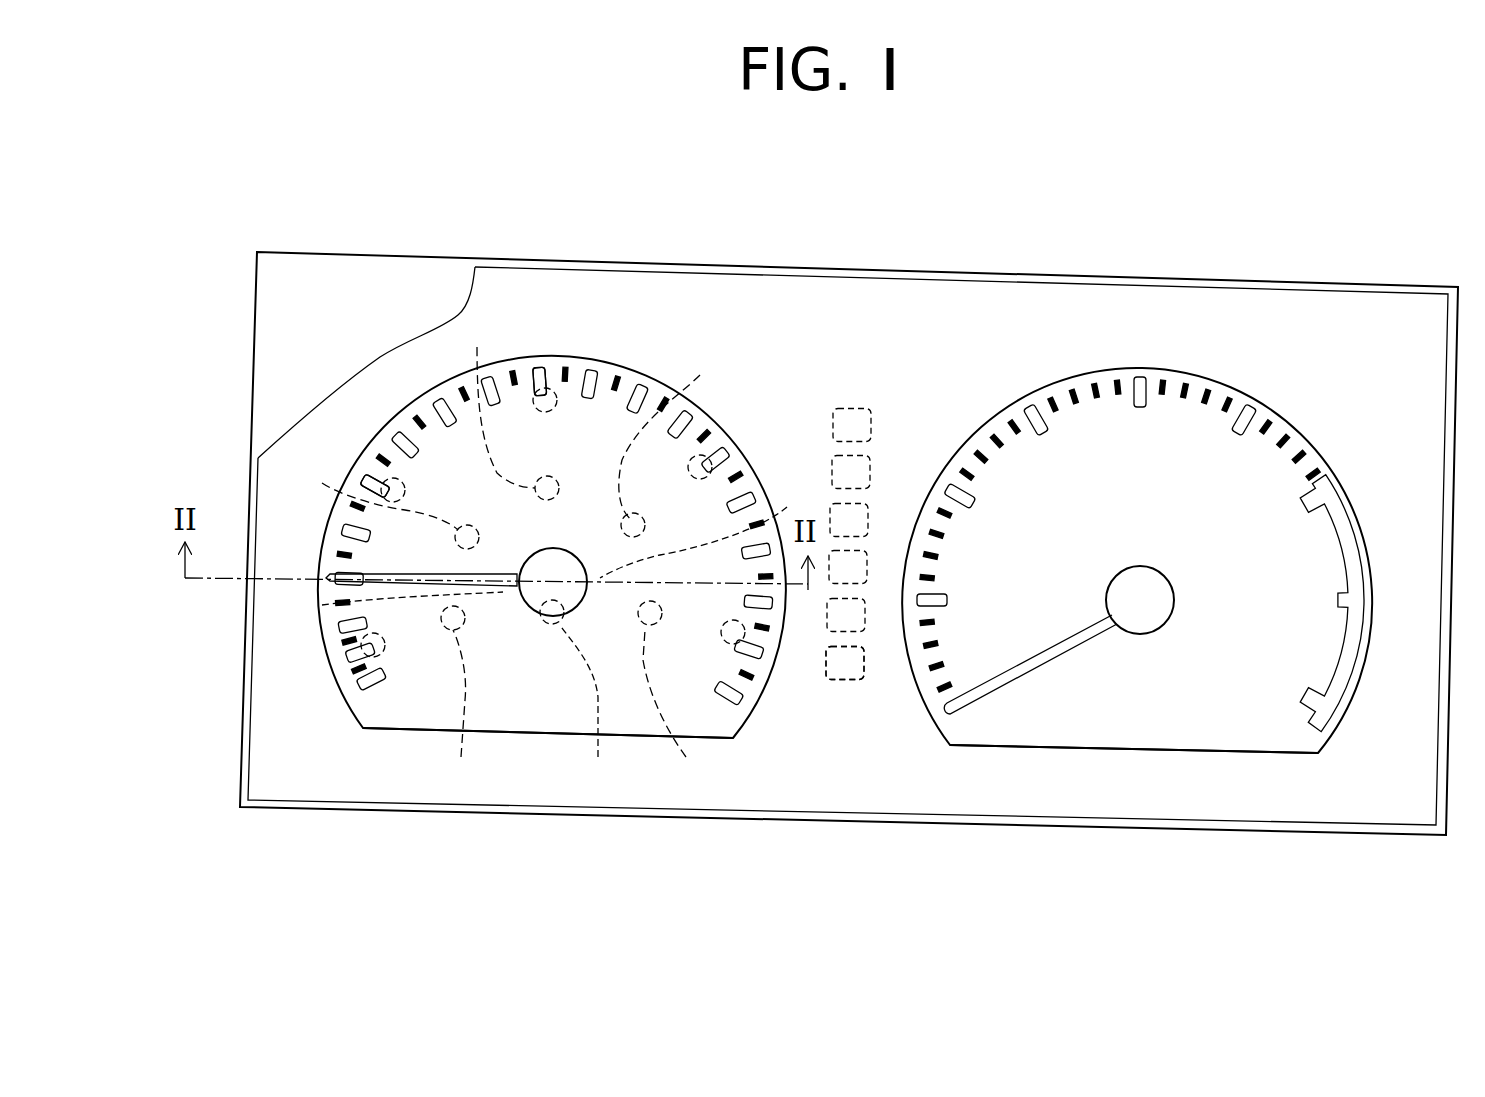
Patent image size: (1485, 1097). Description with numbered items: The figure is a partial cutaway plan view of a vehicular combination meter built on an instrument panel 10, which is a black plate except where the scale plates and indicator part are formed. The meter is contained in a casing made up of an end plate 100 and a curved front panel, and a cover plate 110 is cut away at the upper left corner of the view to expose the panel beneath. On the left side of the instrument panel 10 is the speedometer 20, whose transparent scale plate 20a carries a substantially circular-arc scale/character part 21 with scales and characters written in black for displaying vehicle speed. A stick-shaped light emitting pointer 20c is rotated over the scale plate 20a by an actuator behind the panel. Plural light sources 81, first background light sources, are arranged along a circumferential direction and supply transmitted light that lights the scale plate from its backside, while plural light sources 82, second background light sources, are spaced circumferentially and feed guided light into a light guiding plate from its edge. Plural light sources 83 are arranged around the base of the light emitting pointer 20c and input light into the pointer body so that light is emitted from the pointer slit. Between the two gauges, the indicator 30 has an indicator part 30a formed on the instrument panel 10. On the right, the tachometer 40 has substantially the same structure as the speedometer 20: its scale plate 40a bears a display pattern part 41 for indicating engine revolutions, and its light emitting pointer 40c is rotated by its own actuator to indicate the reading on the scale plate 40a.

The instrument panel 10 is at (1290, 327).
The end plate 100 is at (988, 270).
The cover plate 110 is at (352, 292).
The speedometer 20 is at (707, 400).
The scale plate 20a is at (618, 703).
The light emitting pointer 20c is at (474, 577).
The scale/character part 21 is at (607, 379).
The light sources 81 is at (538, 366).
The light sources 82 is at (500, 552).
The light sources 83 is at (543, 591).
The indicator 30 is at (870, 392).
The indicator part 30a is at (852, 683).
The tachometer 40 is at (1322, 437).
The scale plate 40a is at (1222, 718).
The light emitting pointer 40c is at (1058, 666).
The display pattern part 41 is at (1126, 383).